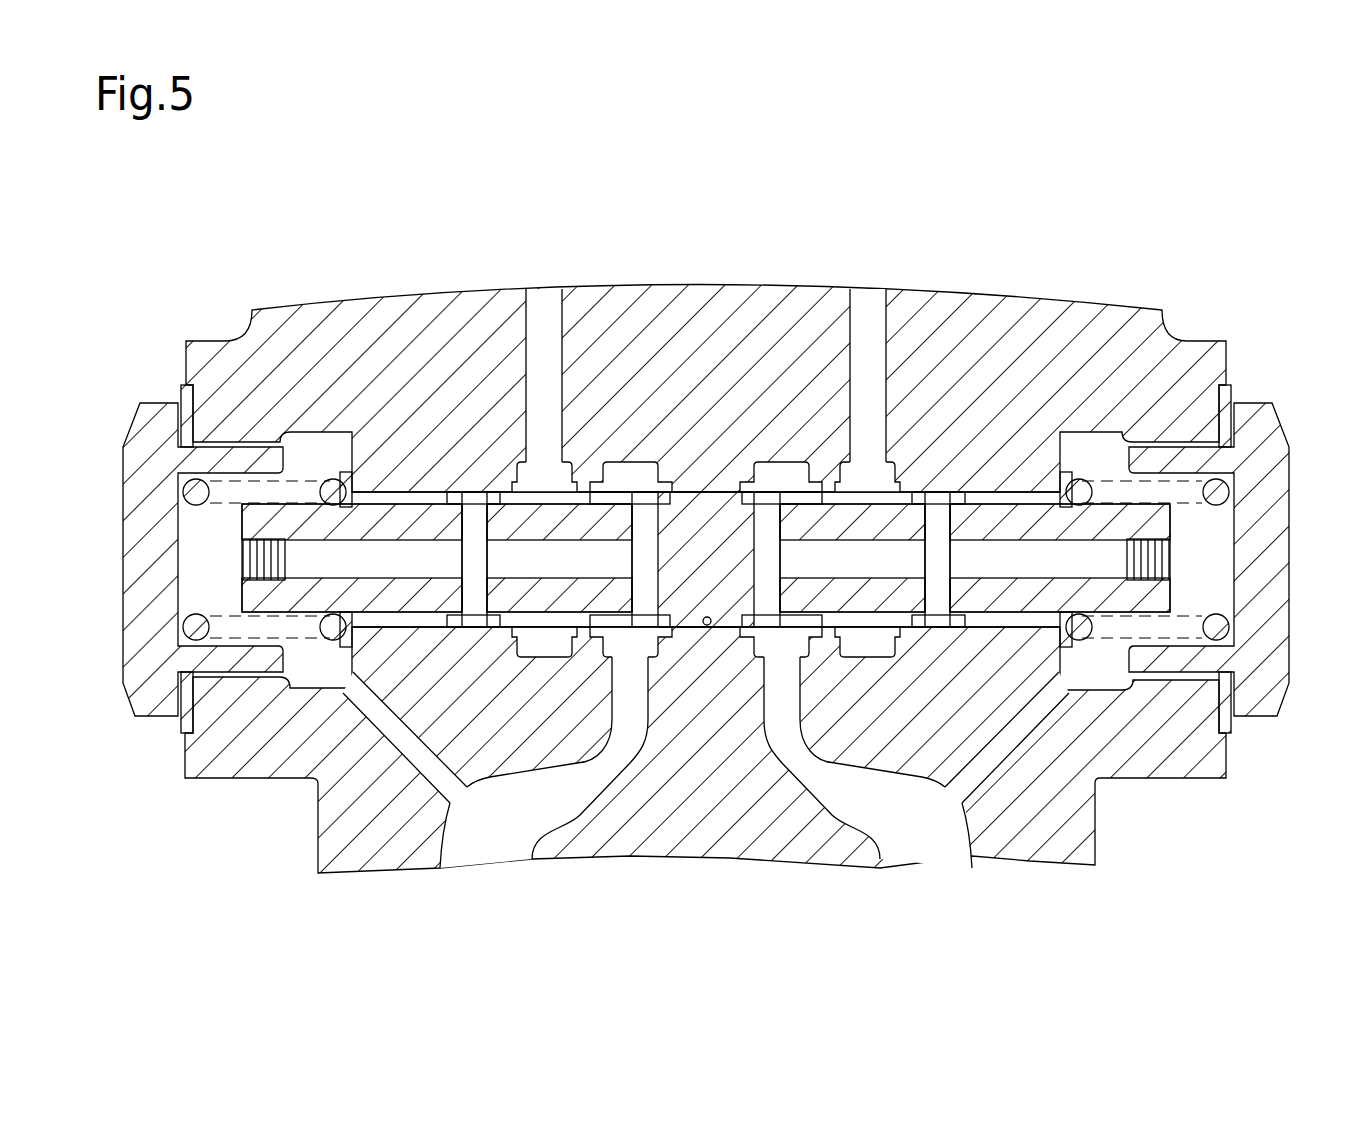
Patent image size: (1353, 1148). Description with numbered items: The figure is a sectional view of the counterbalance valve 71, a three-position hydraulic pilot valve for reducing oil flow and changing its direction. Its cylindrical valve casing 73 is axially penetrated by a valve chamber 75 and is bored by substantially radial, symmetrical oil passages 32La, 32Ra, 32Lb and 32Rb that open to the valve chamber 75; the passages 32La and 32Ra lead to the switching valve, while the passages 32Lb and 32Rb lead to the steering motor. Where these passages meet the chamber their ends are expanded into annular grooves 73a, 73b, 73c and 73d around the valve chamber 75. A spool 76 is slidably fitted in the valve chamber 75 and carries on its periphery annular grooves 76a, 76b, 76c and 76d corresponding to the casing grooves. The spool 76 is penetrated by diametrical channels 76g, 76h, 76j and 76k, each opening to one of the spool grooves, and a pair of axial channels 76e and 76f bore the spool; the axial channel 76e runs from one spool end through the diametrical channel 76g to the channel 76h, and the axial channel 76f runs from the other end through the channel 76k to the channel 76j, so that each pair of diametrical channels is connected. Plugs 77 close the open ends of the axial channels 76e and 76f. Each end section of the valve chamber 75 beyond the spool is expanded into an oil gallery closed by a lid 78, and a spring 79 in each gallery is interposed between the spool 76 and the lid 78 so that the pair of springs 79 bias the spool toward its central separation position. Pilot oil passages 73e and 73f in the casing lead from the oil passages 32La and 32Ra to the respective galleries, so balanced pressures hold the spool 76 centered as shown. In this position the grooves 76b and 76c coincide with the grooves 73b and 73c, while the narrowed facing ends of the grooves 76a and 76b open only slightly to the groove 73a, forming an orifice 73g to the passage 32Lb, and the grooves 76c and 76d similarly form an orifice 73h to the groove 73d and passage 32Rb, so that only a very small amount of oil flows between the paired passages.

The counterbalance valve 71 is at (730, 255).
The valve casing 73 is at (1085, 300).
The annular groove 73a is at (513, 473).
The annular groove 73b is at (600, 648).
The annular groove 73c is at (818, 648).
The annular groove 73d is at (900, 473).
The pilot oil passage 73e is at (410, 758).
The pilot oil passage 73f is at (1005, 745).
The orifice 73g is at (573, 497).
The orifice 73h is at (845, 505).
The valve chamber 75 is at (708, 628).
The spool 76 is at (697, 497).
The annular groove 76a is at (447, 497).
The annular groove 76b is at (623, 497).
The annular groove 76c is at (782, 497).
The annular groove 76d is at (948, 620).
The axial channel 76e is at (415, 576).
The axial channel 76f is at (1050, 576).
The diametrical channel 76g is at (452, 620).
The diametrical channel 76h is at (640, 530).
The diametrical channel 76j is at (768, 528).
The diametrical channel 76k is at (963, 522).
The plug 77 is at (243, 555).
The lid 78 is at (135, 712).
The spring 79 is at (140, 440).
The oil passage 32La is at (502, 840).
The oil passage 32Lb is at (540, 300).
The oil passage 32Ra is at (920, 840).
The oil passage 32Rb is at (865, 305).